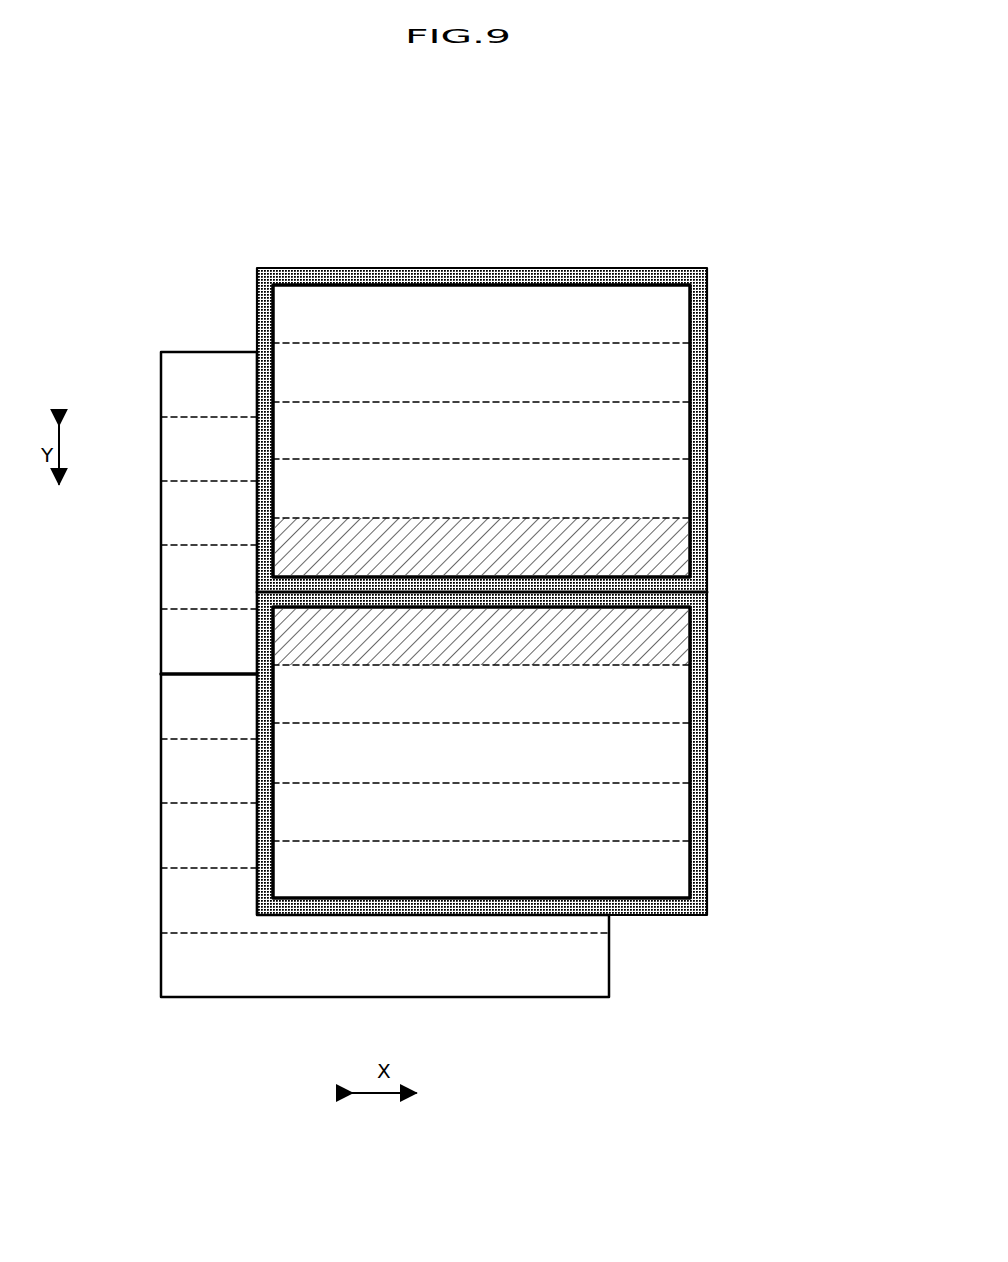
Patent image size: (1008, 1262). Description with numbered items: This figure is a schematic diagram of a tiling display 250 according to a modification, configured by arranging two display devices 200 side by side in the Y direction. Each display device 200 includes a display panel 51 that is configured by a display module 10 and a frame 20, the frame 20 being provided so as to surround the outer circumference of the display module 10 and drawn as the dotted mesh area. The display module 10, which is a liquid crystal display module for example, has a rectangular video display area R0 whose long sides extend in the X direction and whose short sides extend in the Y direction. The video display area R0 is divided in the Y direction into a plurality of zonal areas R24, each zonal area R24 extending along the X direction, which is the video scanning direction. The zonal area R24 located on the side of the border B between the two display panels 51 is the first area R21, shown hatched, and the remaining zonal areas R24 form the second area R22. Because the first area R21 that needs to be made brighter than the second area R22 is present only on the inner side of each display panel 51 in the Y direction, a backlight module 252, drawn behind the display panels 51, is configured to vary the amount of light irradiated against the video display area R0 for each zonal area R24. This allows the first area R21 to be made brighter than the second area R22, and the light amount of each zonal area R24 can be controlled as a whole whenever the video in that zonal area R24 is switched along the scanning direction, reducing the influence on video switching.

The tiling display 250 is at (478, 569).
The display device 200 is at (478, 615).
The backlight module 252 is at (173, 349).
The display panel 51 is at (486, 615).
The frame 20 is at (297, 278).
The display module 10 is at (510, 630).
The first area R21 is at (707, 518).
The second area R22 is at (707, 285).
The video display area R0 is at (776, 383).
The zonal area R24 is at (513, 317).
The border B is at (675, 597).